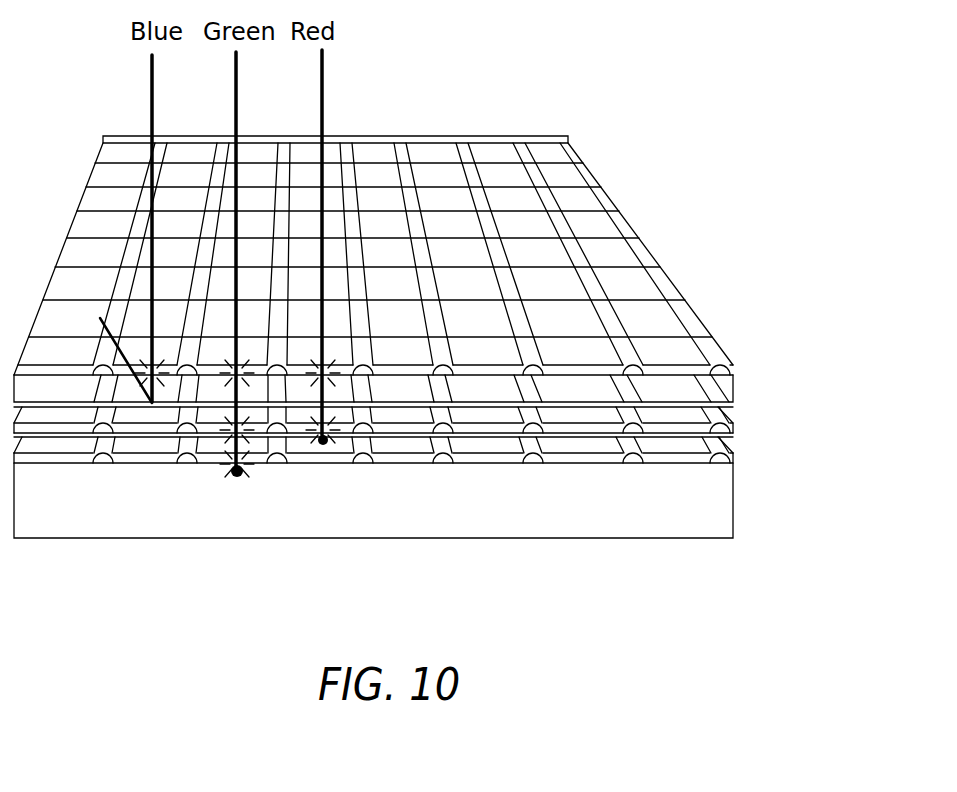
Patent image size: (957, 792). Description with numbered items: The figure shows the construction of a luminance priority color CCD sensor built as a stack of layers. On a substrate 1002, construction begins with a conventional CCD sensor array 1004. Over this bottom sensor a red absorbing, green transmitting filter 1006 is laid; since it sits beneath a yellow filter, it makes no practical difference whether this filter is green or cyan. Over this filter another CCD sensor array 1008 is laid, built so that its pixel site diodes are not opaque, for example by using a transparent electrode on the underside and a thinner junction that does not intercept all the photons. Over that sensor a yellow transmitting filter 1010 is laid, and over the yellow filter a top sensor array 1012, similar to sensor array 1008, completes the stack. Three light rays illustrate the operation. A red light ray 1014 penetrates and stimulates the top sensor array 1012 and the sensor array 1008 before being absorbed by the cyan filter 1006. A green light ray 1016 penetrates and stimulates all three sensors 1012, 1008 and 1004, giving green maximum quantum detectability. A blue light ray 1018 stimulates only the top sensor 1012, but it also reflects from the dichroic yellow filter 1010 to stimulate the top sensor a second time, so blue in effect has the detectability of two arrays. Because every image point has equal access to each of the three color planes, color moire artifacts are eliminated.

The substrate 1002 is at (73, 525).
The CCD sensor array 1004 is at (725, 462).
The red absorbing, green transmitting filter 1006 is at (725, 437).
The CCD sensor array 1008 is at (720, 428).
The yellow transmitting filter 1010 is at (730, 402).
The top sensor array 1012 is at (727, 365).
The red light ray 1014 is at (326, 86).
The green light ray 1016 is at (240, 85).
The blue light ray 1018 is at (156, 85).